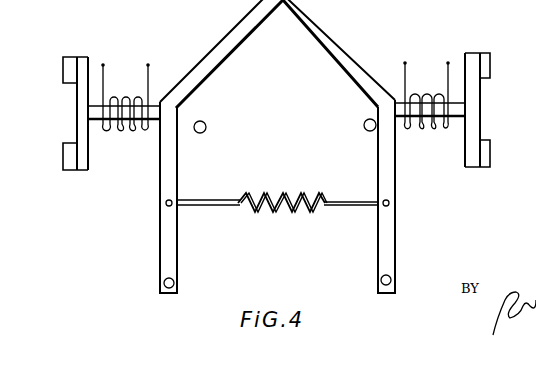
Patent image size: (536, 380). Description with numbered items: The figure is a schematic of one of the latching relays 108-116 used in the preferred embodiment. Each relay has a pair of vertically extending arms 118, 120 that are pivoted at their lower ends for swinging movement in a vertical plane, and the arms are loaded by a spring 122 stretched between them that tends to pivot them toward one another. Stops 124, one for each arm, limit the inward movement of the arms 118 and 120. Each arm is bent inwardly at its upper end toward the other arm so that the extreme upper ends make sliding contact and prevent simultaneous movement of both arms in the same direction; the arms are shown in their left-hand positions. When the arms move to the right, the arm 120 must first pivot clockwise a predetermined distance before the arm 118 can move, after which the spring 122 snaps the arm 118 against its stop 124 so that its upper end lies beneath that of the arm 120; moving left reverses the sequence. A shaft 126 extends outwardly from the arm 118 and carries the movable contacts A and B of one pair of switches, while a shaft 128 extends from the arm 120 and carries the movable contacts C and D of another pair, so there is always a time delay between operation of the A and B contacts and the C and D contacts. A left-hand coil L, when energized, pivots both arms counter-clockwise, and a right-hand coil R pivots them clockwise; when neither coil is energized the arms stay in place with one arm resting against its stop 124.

The latching relays 108-116 is at (242, 19).
The arm 118 is at (164, 235).
The arm 120 is at (393, 256).
The spring 122 is at (290, 213).
The stops 124 is at (204, 132).
The shaft 126 is at (96, 113).
The shaft 128 is at (460, 112).
The movable contact A is at (69, 78).
The movable contact B is at (68, 162).
The movable contact C is at (489, 68).
The movable contact D is at (487, 158).
The left-hand coil L is at (112, 123).
The right-hand coil R is at (436, 120).